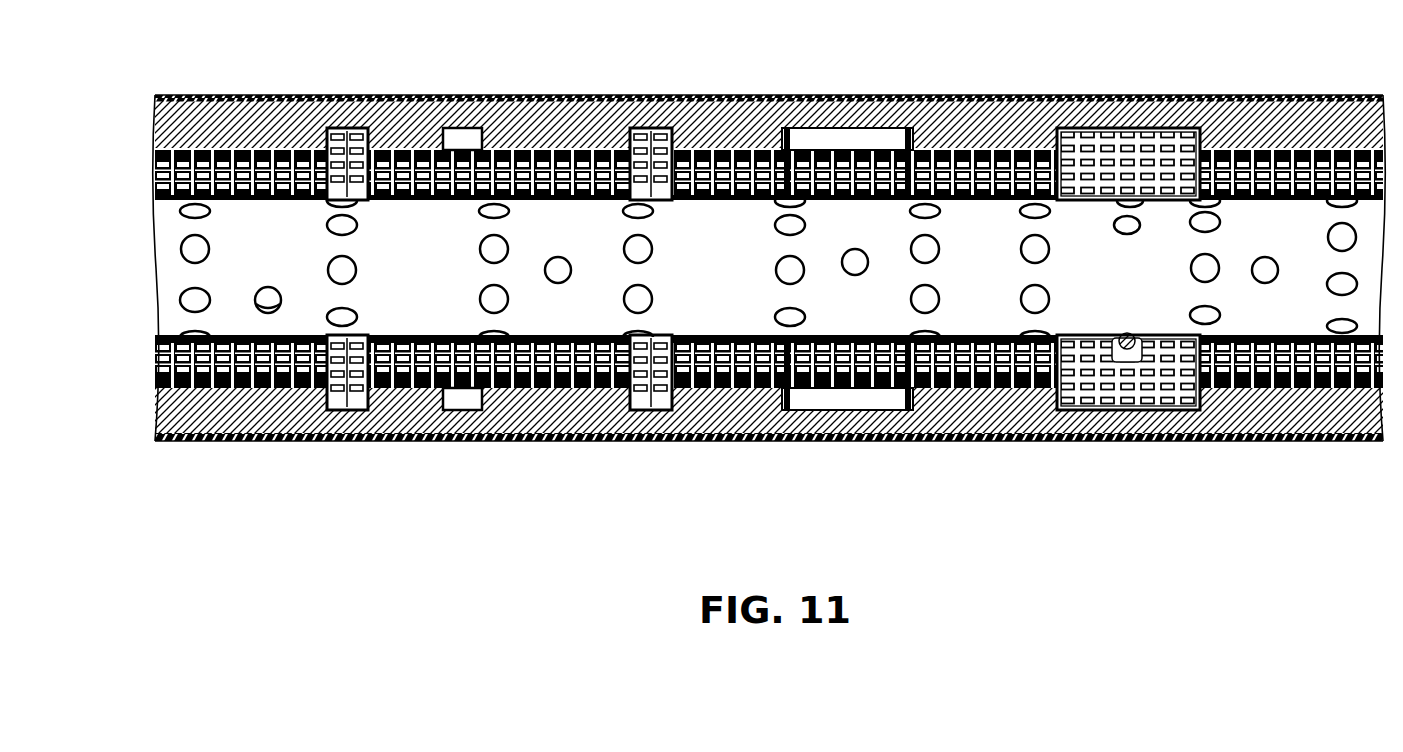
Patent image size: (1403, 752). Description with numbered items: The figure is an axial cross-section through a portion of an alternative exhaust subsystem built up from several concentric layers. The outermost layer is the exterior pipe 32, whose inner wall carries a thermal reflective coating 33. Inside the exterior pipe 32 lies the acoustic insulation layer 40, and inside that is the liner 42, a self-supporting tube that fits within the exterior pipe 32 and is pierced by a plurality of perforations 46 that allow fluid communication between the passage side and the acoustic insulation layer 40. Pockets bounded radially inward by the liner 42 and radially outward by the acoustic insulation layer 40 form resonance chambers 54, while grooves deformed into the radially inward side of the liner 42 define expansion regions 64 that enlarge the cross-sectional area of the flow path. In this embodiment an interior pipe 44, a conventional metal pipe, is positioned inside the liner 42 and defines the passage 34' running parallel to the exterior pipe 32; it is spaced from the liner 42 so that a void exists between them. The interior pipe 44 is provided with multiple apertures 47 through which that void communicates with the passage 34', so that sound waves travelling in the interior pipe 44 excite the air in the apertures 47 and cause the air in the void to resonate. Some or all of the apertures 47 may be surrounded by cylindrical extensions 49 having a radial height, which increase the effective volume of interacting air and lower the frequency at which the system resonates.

The exterior pipe 32 is at (210, 97).
The thermal reflective coating 33 is at (285, 101).
The acoustic insulation layer 40 is at (404, 140).
The liner 42 is at (550, 150).
The perforations 46 is at (718, 192).
The interior pipe 44 is at (975, 240).
The expansion regions 64 is at (348, 410).
The resonance chambers 54 is at (465, 413).
The extensions 49 is at (1128, 365).
The apertures 47 is at (1342, 330).
The passage 34' is at (714, 268).